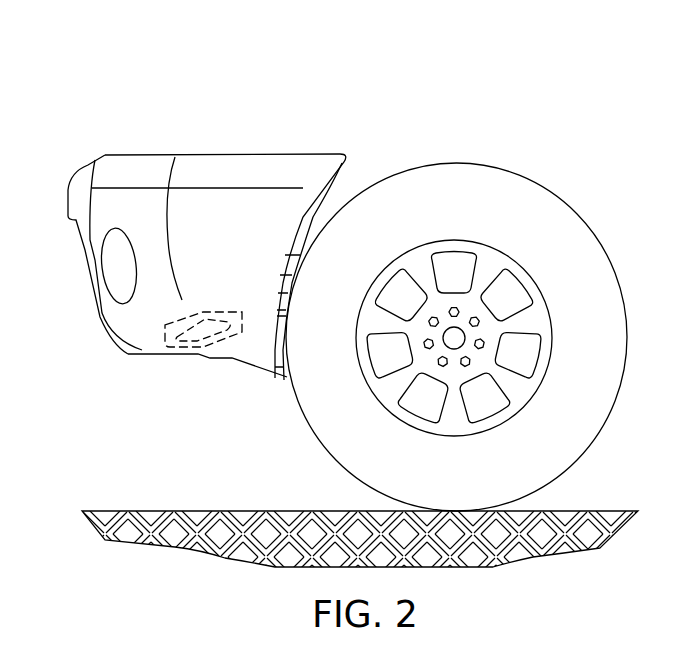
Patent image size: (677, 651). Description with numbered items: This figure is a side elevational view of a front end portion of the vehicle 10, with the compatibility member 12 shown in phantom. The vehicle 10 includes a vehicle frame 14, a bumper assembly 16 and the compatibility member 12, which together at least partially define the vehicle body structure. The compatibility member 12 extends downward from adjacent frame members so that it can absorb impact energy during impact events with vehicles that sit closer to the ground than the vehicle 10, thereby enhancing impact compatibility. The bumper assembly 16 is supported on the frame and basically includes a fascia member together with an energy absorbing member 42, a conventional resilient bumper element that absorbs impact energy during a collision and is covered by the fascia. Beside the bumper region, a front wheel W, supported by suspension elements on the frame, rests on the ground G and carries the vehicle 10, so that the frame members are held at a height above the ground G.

The vehicle 10 is at (389, 53).
The compatibility member 12 is at (222, 294).
The vehicle frame 14 is at (390, 143).
The bumper assembly 16 is at (128, 205).
The energy absorbing member 42 is at (100, 305).
The front wheels W is at (547, 240).
The ground G is at (230, 511).